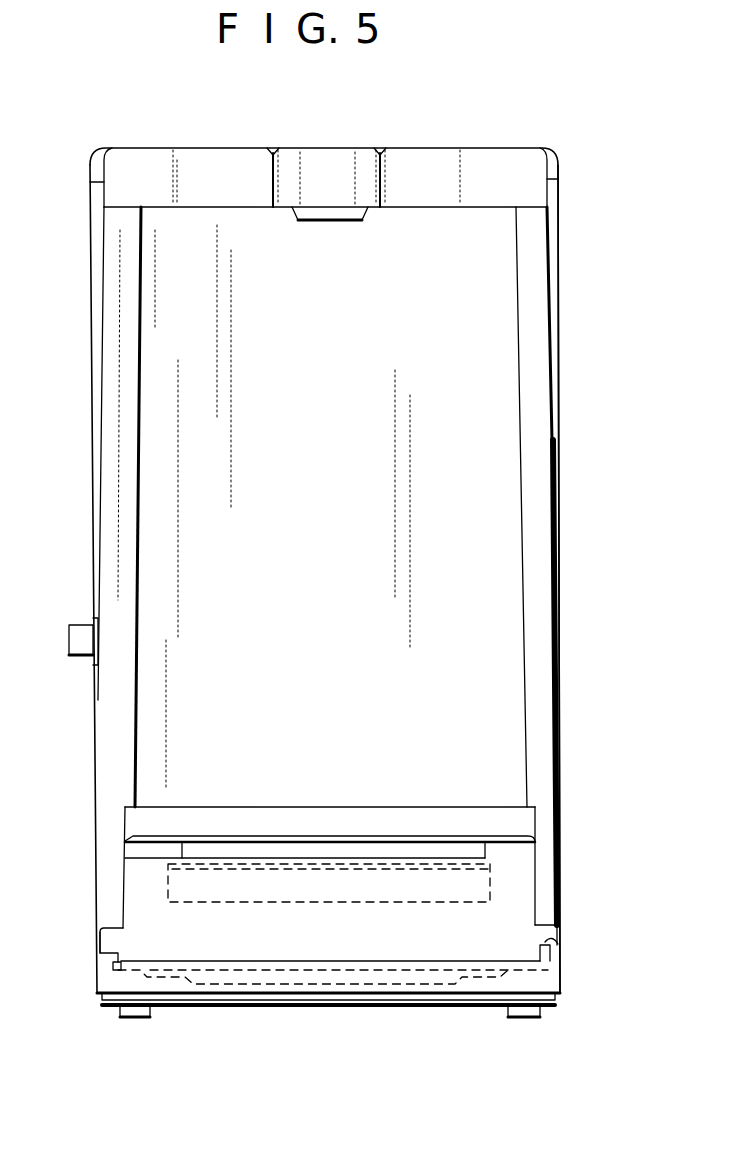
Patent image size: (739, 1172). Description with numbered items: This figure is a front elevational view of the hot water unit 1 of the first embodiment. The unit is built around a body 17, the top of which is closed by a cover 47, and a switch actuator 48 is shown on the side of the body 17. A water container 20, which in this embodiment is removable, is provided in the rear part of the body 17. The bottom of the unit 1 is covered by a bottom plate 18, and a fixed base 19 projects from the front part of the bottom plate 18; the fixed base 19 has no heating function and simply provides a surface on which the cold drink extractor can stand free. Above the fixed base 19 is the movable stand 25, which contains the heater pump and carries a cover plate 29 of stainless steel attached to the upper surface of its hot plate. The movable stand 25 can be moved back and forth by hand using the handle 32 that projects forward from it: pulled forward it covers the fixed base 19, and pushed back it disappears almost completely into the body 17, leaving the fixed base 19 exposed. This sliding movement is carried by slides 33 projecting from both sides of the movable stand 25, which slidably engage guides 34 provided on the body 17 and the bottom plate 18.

The hot water unit 1 is at (482, 148).
The cover 47 is at (221, 163).
The water container 20 is at (552, 258).
The body 17 is at (540, 598).
The switch actuator 48 is at (80, 630).
The handle 32 is at (168, 857).
The cover plate 29 is at (342, 880).
The movable stand 25 is at (305, 894).
The slides 33 is at (129, 955).
The guides 34 is at (558, 950).
The bottom plate 18 is at (258, 1000).
The fixed base 19 is at (345, 986).